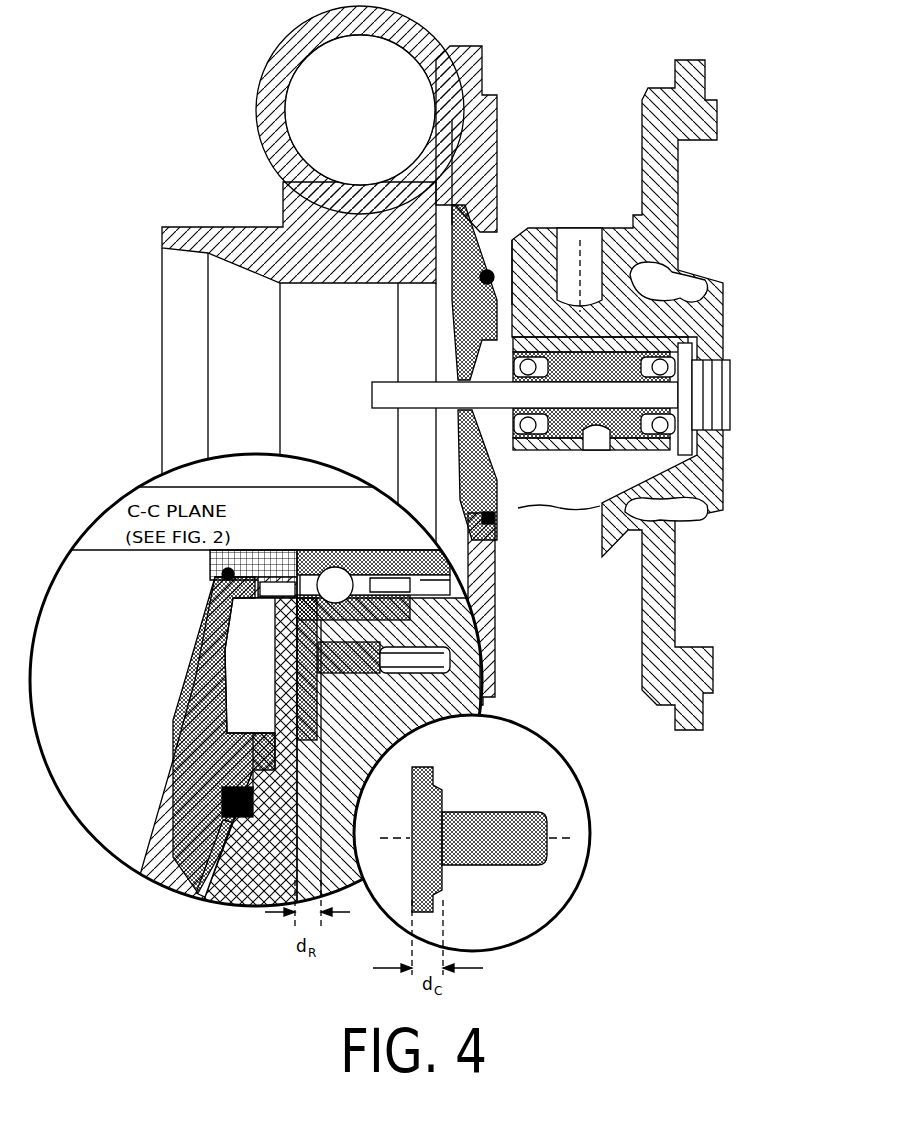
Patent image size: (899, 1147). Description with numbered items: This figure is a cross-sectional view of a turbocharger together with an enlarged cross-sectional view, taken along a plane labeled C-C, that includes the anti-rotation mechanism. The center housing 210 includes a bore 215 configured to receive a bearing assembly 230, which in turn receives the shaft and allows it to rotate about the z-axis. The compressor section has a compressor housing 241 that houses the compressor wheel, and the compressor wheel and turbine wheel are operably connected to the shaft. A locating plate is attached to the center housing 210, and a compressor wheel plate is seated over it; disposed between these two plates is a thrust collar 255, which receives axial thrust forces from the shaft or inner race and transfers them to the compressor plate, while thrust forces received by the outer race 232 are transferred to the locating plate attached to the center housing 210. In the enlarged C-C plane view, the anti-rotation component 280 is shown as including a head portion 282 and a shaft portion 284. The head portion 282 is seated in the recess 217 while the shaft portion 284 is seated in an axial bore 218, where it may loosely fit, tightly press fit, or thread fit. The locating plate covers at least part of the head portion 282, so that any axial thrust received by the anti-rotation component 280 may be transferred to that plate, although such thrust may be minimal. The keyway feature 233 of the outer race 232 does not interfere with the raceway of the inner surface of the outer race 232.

The center housing 210 is at (645, 107).
The compressor housing 241 is at (378, 245).
The bearing assembly 230 is at (608, 378).
The bore 215 is at (606, 452).
The thrust collar 255 is at (213, 563).
The keyway feature 233 is at (270, 612).
The outer race 232 is at (455, 618).
The anti-rotation component 280 is at (330, 690).
The head portion 282 is at (448, 790).
The shaft portion 284 is at (505, 812).
The recess 217 is at (290, 725).
The axial bore 218 is at (222, 800).